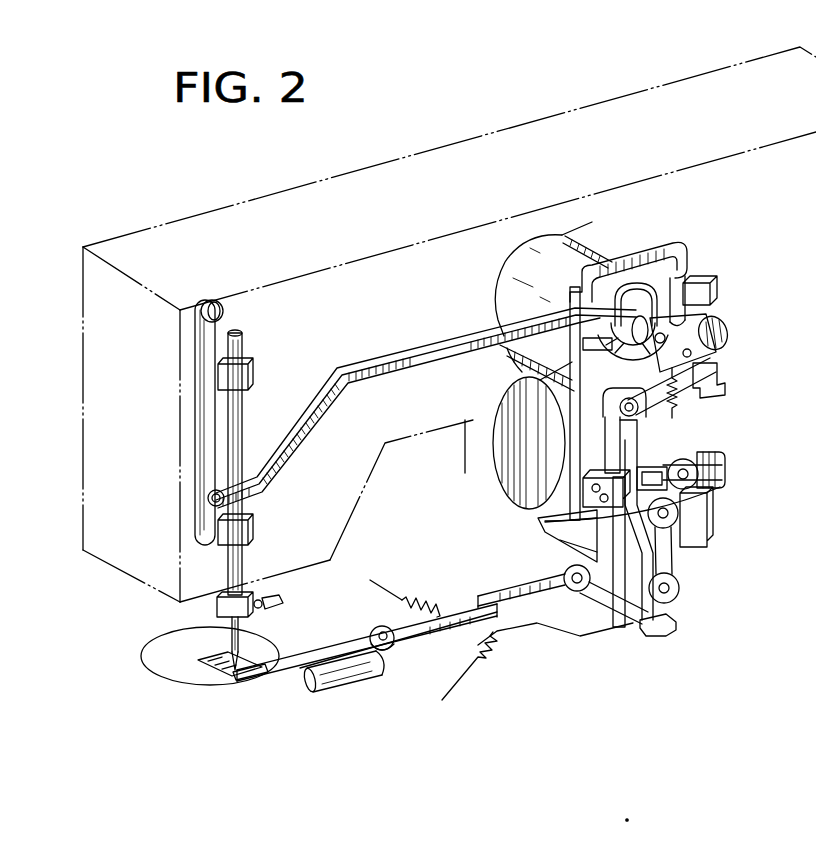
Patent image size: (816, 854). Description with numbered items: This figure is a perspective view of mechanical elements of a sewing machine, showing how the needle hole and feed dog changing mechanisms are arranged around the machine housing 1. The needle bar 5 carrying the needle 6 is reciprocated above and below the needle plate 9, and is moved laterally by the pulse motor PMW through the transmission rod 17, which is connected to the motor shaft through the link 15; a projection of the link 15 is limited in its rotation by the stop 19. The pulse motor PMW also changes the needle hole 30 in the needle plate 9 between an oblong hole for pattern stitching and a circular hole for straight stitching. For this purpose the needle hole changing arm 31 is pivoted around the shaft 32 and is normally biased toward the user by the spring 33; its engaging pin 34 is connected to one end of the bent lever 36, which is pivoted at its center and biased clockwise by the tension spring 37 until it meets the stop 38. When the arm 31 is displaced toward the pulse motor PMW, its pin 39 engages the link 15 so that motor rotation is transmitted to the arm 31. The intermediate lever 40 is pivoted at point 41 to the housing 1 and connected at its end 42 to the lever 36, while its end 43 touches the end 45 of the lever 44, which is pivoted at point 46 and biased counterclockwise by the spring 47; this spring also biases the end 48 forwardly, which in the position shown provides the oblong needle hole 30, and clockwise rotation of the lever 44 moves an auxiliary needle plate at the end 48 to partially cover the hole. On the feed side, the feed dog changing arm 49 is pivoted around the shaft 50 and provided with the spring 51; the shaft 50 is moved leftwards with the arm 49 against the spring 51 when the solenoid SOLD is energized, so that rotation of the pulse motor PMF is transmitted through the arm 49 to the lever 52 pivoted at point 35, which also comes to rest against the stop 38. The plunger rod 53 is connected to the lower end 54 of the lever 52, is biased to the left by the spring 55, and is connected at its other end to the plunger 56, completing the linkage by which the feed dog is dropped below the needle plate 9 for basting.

The machine housing 1 is at (377, 173).
The needle bar 5 is at (243, 557).
The needle 6 is at (243, 623).
The needle plate 9 is at (168, 638).
The link 15 is at (616, 300).
The transmission rod 17 is at (340, 363).
The stop 19 is at (679, 573).
The needle hole 30 is at (227, 677).
The needle hole changing arm 31 is at (683, 373).
The shaft 32 is at (717, 313).
The spring 33 is at (690, 283).
The engaging pin 34 is at (700, 350).
The pivot point 35 is at (642, 413).
The bent lever 36 is at (650, 445).
The tension spring 37 is at (677, 400).
The stop 38 is at (583, 485).
The pin 39 is at (660, 268).
The intermediate lever 40 is at (520, 579).
The pivot point 41 is at (571, 574).
The end 42 is at (657, 634).
The end 43 is at (477, 597).
The lever 44 is at (418, 638).
The end 45 is at (470, 610).
The pivot point 46 is at (380, 635).
The spring 47 is at (400, 607).
The end 48 is at (270, 678).
The feed dog changing arm 49 is at (720, 478).
The shaft 50 is at (692, 500).
The spring 51 is at (722, 455).
The lever 52 is at (710, 373).
The plunger rod 53 is at (560, 633).
The lower end 54 is at (618, 628).
The spring 55 is at (488, 655).
The plunger 56 is at (360, 676).
The pulse motor PMW is at (513, 288).
The pulse motor PMF is at (497, 420).
The solenoid SOLD is at (540, 520).